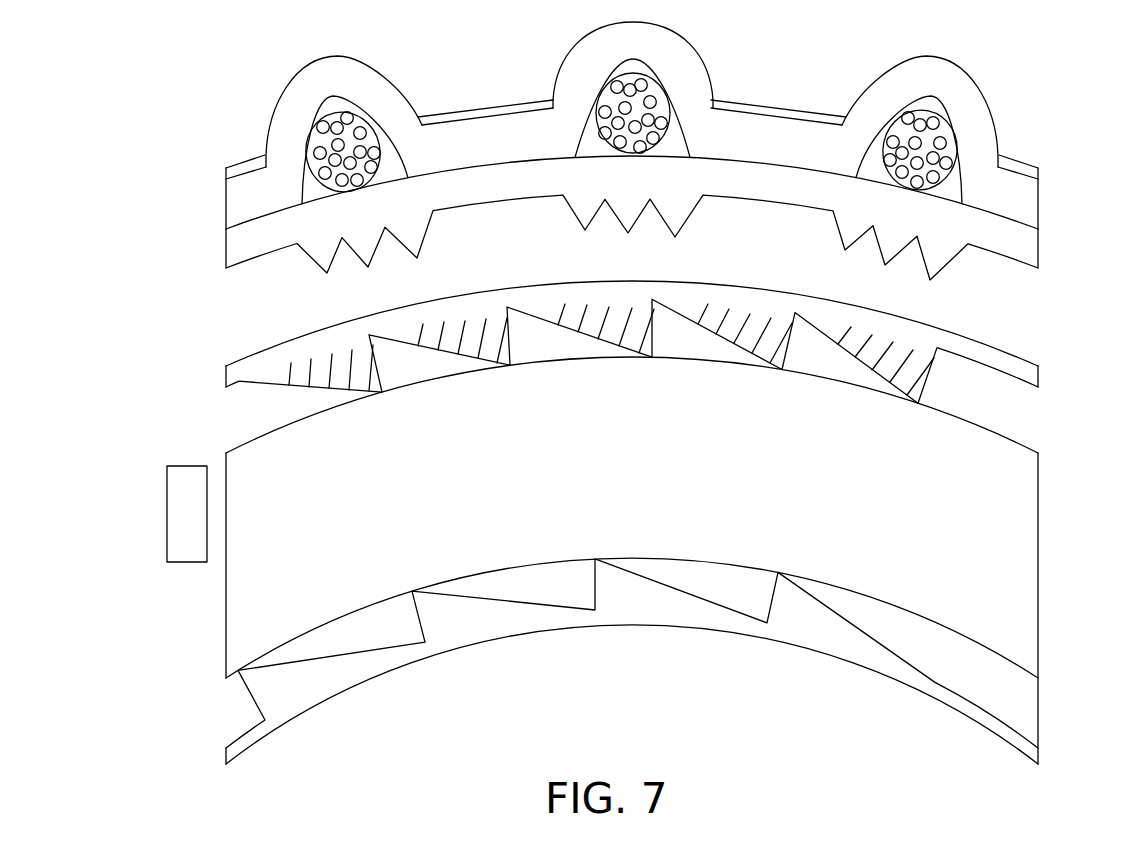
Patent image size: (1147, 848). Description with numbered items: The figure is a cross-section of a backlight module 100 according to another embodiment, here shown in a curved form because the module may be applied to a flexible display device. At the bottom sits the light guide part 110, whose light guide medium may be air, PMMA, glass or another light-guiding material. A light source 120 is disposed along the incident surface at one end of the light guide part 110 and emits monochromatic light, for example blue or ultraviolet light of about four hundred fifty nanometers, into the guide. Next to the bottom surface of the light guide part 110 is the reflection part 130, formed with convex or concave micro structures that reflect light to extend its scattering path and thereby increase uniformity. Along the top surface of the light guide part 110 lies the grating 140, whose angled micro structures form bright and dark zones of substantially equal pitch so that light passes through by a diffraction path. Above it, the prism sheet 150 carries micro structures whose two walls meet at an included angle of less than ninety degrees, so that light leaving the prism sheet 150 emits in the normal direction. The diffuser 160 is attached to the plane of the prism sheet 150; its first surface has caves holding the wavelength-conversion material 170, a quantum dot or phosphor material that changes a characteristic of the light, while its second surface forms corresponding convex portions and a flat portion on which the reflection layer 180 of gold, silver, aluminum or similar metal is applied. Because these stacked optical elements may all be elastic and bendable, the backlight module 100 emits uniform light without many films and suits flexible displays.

The backlight module 100 is at (112, 57).
The light guide part 110 is at (645, 560).
The light source 120 is at (163, 514).
The reflection part 130 is at (243, 690).
The grating 140 is at (222, 373).
The prism sheet 150 is at (222, 250).
The diffuser 160 is at (222, 202).
The wavelength-conversion material 170 is at (947, 108).
The reflection layer 180 is at (1047, 168).